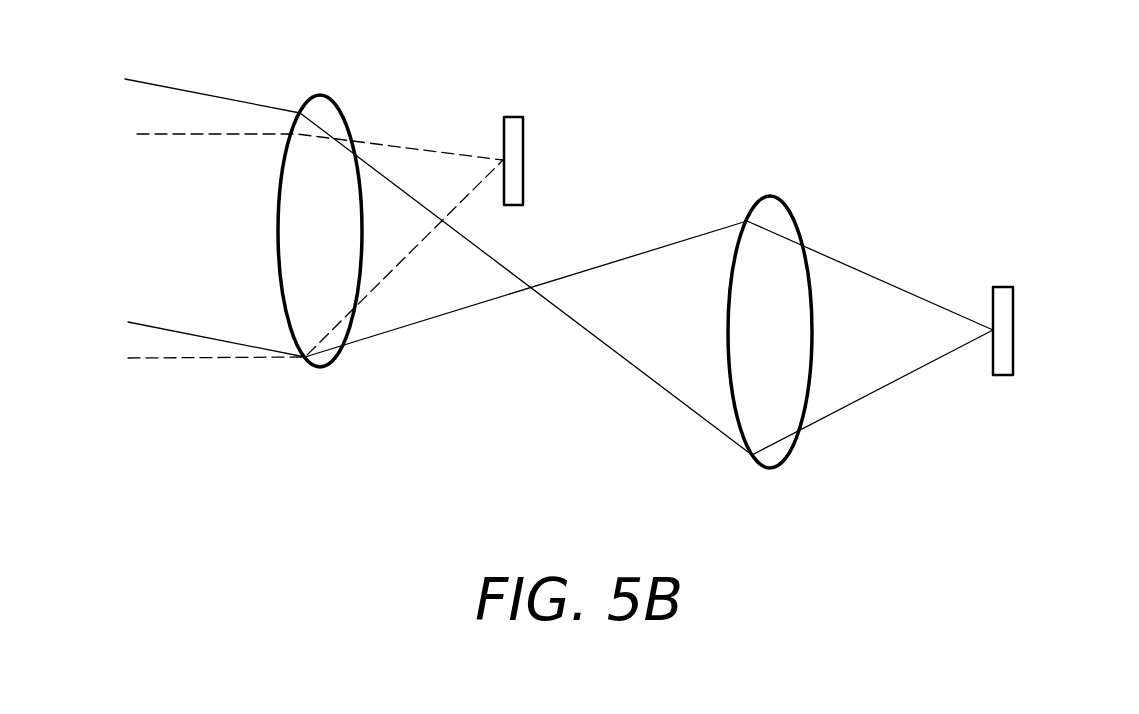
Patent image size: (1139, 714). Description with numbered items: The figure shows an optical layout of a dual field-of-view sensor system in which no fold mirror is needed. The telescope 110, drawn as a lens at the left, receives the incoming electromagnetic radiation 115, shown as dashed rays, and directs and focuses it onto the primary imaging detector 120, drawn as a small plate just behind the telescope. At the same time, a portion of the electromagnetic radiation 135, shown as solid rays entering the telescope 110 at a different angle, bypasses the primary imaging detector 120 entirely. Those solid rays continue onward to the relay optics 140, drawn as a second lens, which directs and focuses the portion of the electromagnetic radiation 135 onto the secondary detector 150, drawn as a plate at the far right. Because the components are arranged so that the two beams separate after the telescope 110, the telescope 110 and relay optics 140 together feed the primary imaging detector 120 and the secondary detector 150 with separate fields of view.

The telescope 110 is at (335, 100).
The incoming electromagnetic radiation 115 is at (210, 134).
The primary imaging detector 120 is at (523, 132).
The portion of the electromagnetic radiation 135 is at (203, 92).
The relay optics 140 is at (780, 195).
The secondary detector 150 is at (1013, 293).